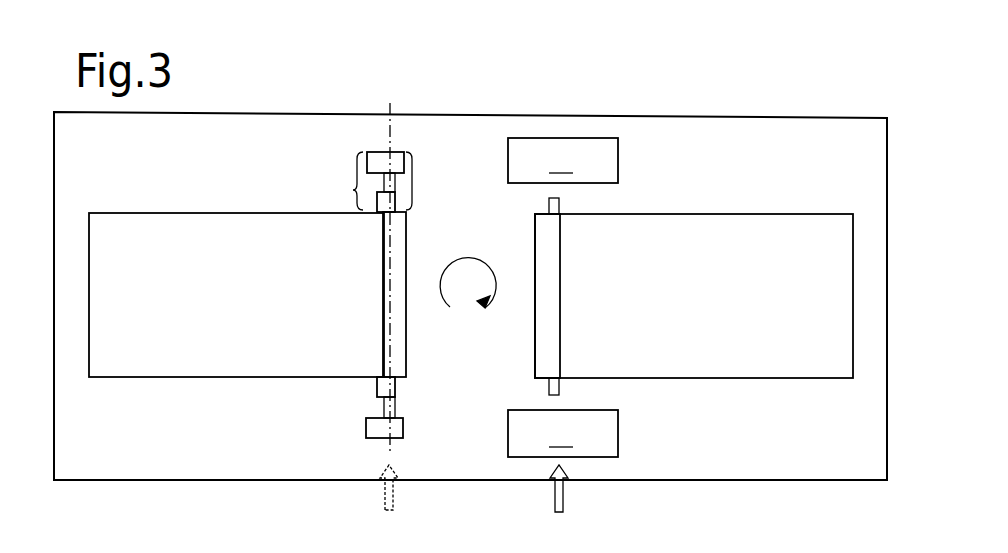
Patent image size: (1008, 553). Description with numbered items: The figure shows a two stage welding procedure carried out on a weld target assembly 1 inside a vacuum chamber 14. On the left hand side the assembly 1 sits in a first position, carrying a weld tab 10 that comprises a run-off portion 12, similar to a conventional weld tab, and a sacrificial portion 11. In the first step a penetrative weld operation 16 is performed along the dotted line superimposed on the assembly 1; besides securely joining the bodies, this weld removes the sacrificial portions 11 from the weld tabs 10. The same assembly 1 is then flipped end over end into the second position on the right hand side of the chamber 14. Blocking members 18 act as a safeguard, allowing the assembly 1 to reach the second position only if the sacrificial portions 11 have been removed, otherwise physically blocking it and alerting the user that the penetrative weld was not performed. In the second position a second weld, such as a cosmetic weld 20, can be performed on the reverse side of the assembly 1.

The weld target assembly 1 is at (277, 360).
The weld tab 10 is at (371, 290).
The sacrificial portion 11 is at (357, 168).
The run-off portion 12 is at (354, 191).
The vacuum chamber 14 is at (655, 115).
The penetrative weld operation 16 is at (382, 494).
The blocking members 18 is at (563, 297).
The cosmetic weld 20 is at (563, 494).